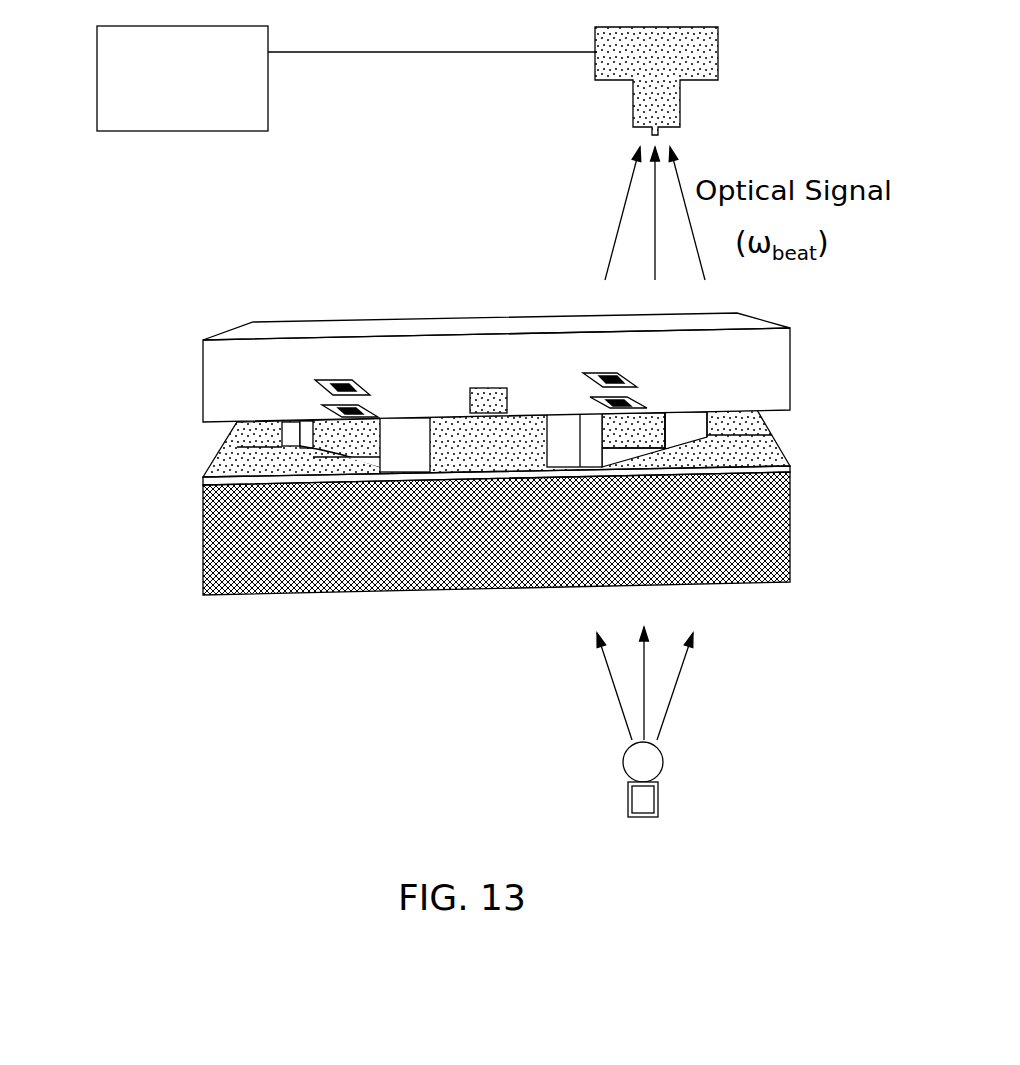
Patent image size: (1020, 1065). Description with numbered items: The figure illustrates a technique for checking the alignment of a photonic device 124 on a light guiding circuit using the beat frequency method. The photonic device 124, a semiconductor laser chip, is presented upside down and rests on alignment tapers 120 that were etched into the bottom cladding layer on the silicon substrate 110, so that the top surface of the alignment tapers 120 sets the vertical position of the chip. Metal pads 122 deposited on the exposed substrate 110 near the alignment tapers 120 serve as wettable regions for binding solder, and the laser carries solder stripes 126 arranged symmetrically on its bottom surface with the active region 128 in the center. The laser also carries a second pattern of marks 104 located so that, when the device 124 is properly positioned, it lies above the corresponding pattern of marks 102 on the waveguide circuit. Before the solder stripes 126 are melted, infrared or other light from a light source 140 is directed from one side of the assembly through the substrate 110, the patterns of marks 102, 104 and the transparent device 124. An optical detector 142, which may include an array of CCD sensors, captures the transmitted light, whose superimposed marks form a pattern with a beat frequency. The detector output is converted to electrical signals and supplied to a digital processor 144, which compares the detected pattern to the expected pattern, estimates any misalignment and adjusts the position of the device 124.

The pattern of marks 102 is at (330, 413).
The second pattern of marks 104 is at (330, 383).
The silicon substrate 110 is at (791, 527).
The alignment tapers 120 is at (413, 418).
The metal pads 122 is at (792, 458).
The photonic device 124 is at (255, 410).
The solder stripes 126 is at (672, 440).
The active region 128 is at (483, 388).
The light source 140 is at (660, 795).
The optical detector 142 is at (718, 52).
The digital processor 144 is at (97, 80).